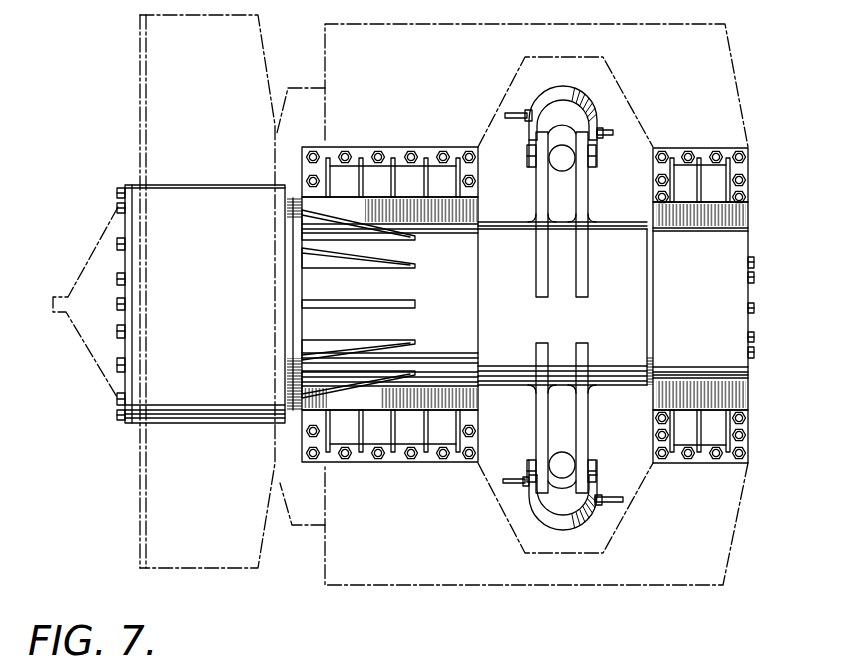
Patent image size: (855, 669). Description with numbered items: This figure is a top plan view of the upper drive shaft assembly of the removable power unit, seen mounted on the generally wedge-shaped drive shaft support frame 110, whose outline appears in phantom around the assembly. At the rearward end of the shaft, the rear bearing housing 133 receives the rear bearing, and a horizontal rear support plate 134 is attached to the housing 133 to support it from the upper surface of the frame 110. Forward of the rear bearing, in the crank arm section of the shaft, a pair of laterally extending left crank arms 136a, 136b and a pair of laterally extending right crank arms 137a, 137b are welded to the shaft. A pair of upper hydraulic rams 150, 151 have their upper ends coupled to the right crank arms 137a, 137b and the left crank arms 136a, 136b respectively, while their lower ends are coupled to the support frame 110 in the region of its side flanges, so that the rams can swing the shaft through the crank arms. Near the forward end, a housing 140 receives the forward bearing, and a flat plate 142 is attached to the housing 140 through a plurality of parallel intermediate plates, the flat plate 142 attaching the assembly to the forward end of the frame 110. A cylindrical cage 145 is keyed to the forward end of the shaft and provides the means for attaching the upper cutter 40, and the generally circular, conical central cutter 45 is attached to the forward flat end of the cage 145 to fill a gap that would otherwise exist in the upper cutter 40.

The upper cutter 40 is at (140, 90).
The central cutter 45 is at (86, 377).
The drive shaft support frame 110 is at (742, 520).
The rear bearing housing 133 is at (733, 240).
The horizontal rear support plate 134 is at (722, 147).
The left crank arm 136a is at (534, 442).
The left crank arm 136b is at (613, 432).
The right crank arm 137a is at (588, 204).
The right crank arm 137b is at (536, 205).
The housing 140 is at (459, 238).
The flat plate 142 is at (398, 462).
The cylindrical cage 145 is at (174, 178).
The upper hydraulic ram 150 is at (570, 86).
The upper hydraulic ram 151 is at (542, 517).